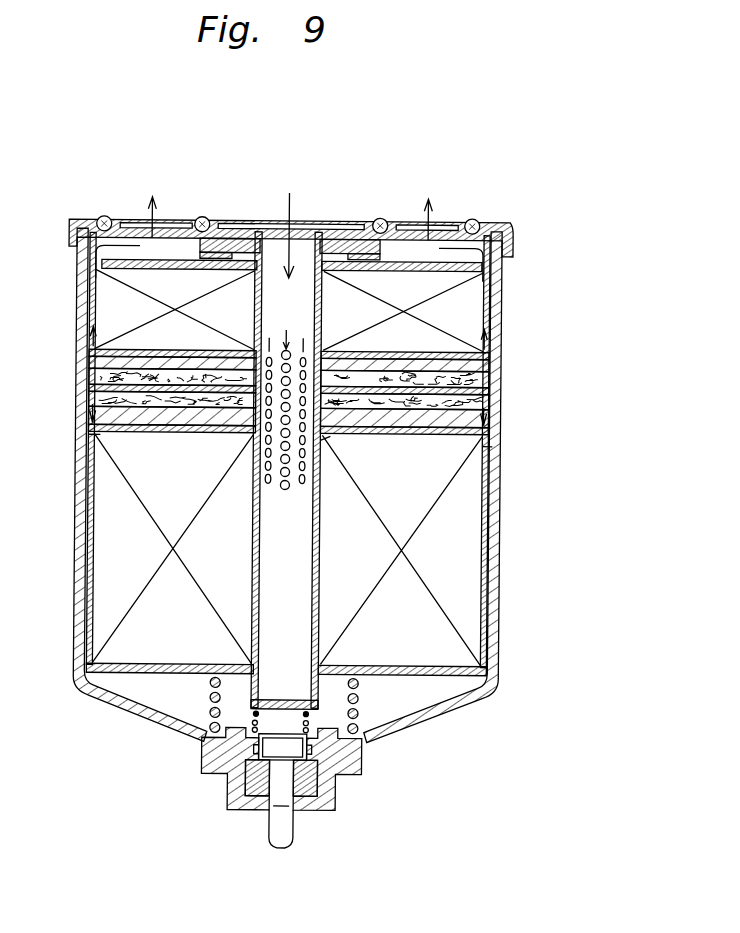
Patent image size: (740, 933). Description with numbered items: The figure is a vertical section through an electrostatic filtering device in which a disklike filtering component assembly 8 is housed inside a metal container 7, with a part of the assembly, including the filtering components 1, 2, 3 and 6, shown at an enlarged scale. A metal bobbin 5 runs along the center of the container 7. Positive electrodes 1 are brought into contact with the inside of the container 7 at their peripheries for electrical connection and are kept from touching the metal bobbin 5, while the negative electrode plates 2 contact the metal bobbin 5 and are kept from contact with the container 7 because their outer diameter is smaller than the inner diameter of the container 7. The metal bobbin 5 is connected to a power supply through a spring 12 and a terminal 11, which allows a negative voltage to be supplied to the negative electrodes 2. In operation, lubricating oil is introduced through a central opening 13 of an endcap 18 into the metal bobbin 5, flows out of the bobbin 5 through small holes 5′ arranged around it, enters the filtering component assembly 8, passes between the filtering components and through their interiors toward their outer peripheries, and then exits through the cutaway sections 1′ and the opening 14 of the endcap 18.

The positive electrode 1 is at (484, 342).
The cutaway section 1′ is at (92, 442).
The negative electrode plate 2 is at (487, 416).
The filtering component 3 is at (487, 358).
The metal bobbin 5 is at (320, 528).
The small hole 5′ is at (268, 482).
The filtering component 6 is at (487, 386).
The container 7 is at (500, 576).
The filtering component assembly 8 is at (468, 300).
The terminal 11 is at (294, 845).
The spring 12 is at (344, 745).
The central opening 13 is at (300, 215).
The opening 14 is at (142, 228).
The endcap 18 is at (496, 230).